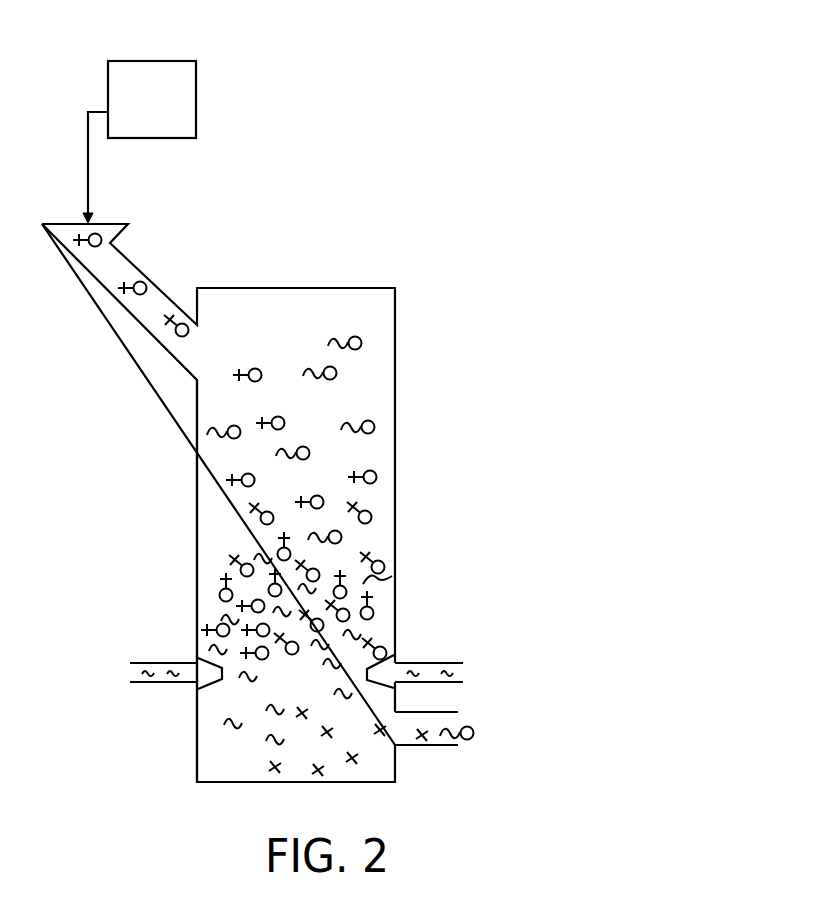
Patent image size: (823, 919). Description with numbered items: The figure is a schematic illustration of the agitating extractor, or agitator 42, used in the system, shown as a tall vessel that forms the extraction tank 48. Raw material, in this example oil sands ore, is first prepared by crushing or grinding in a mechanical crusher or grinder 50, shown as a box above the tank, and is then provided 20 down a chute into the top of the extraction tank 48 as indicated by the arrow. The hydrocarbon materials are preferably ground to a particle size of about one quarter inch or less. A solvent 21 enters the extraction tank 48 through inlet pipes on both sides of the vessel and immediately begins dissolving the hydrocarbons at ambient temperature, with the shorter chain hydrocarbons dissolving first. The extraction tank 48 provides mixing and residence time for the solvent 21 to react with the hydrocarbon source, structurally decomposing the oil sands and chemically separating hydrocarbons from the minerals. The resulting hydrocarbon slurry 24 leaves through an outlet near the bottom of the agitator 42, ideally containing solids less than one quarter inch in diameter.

The mechanical crusher or grinder 50 is at (153, 60).
The providing a supply of raw materials 20 is at (86, 170).
The agitator 42 is at (318, 252).
The extraction tank 48 is at (197, 520).
The solvent 21 is at (163, 663).
The hydrocarbon slurry 24 is at (428, 745).